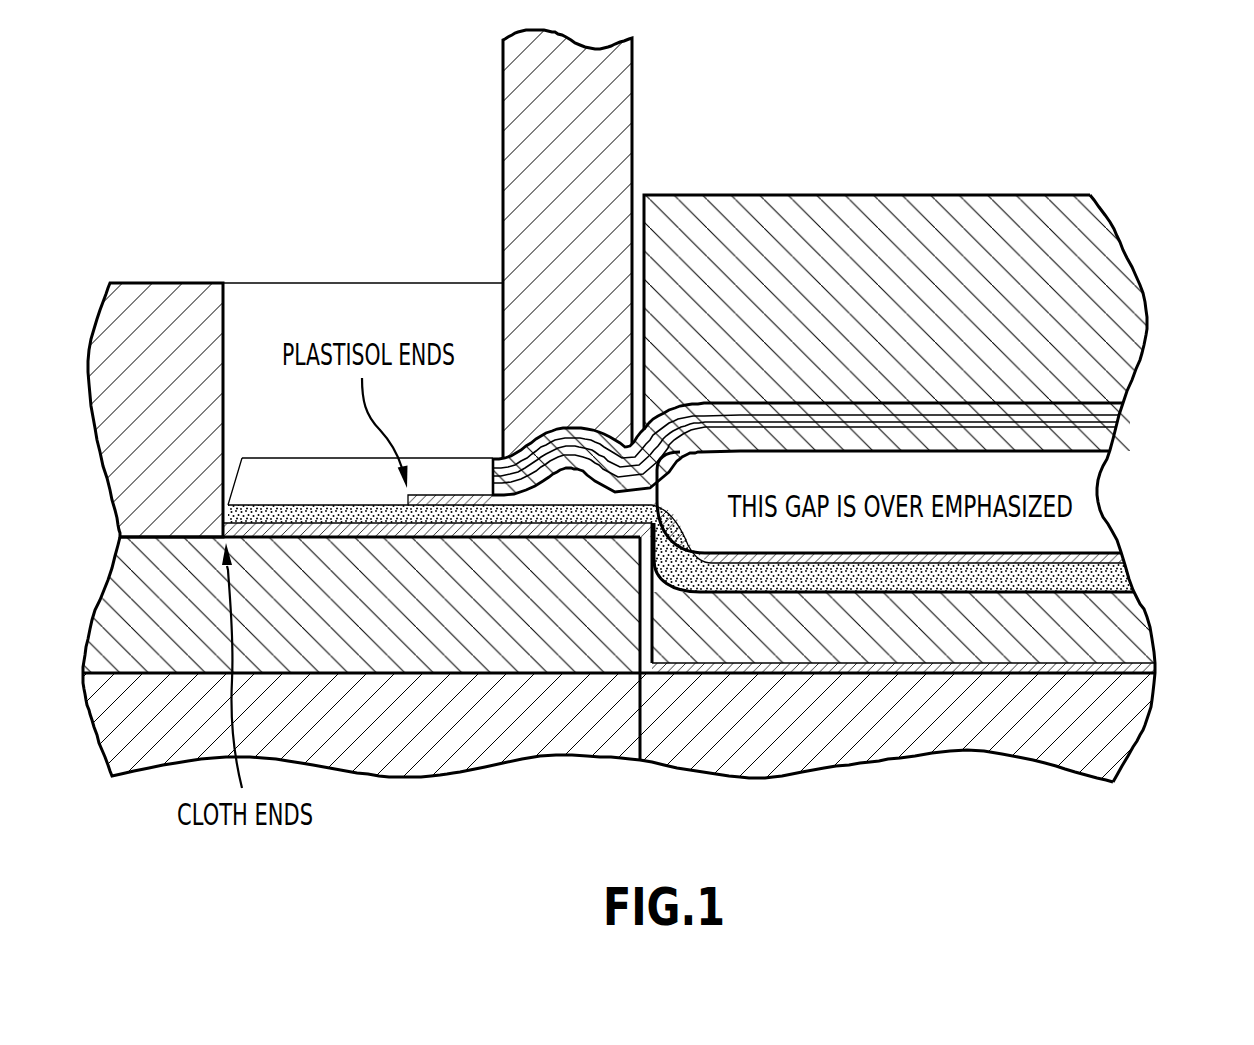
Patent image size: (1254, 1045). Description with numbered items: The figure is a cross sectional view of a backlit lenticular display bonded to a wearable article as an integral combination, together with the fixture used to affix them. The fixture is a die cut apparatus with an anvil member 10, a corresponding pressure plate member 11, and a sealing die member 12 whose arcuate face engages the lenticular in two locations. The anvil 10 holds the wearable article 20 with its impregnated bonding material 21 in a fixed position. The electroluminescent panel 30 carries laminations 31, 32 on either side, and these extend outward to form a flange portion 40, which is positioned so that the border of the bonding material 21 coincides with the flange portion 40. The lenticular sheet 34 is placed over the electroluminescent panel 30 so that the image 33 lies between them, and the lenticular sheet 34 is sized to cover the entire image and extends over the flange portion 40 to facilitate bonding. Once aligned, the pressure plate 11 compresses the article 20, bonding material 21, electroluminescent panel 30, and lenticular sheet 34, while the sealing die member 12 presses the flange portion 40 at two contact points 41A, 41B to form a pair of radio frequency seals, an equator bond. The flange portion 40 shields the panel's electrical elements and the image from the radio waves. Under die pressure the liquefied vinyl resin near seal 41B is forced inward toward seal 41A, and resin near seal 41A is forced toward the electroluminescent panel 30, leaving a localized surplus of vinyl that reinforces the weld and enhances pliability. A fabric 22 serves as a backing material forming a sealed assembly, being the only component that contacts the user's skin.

The anvil member 10 is at (913, 645).
The pressure plate member 11 is at (885, 313).
The sealing die member 12 is at (581, 133).
The wearable article 20 is at (1132, 586).
The impregnated bonding material 21 is at (1113, 556).
The fabric 22 is at (997, 675).
The electroluminescent panel 30 is at (1112, 436).
The lamination 31 is at (1102, 449).
The lamination 32 is at (1116, 424).
The image 33 is at (1110, 413).
The lenticular sheet 34 is at (1089, 403).
The flange portion 40 is at (546, 424).
The seal 41A is at (627, 446).
The seal 41B is at (493, 457).